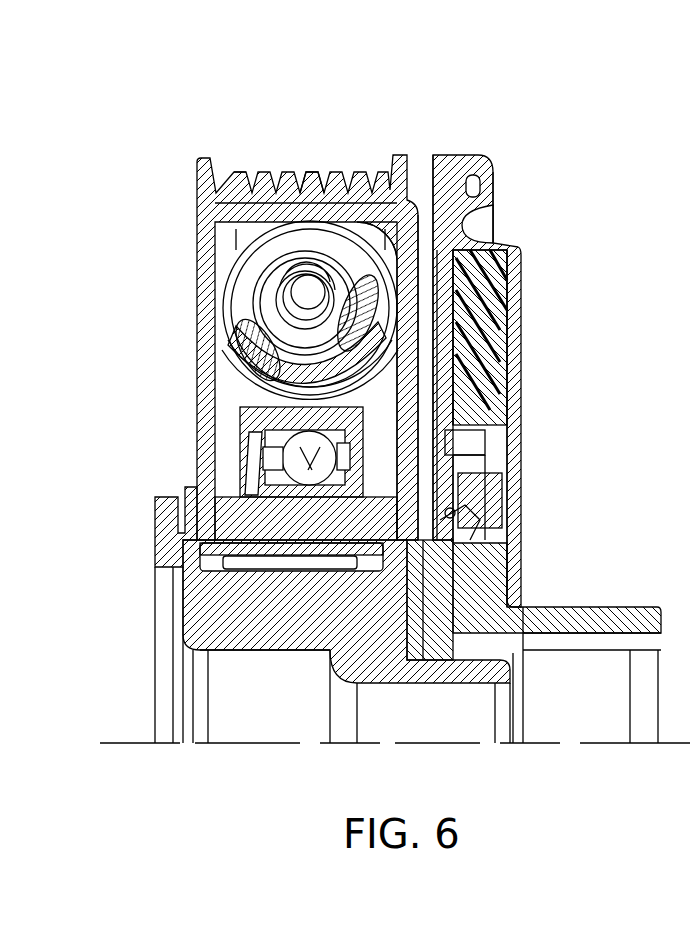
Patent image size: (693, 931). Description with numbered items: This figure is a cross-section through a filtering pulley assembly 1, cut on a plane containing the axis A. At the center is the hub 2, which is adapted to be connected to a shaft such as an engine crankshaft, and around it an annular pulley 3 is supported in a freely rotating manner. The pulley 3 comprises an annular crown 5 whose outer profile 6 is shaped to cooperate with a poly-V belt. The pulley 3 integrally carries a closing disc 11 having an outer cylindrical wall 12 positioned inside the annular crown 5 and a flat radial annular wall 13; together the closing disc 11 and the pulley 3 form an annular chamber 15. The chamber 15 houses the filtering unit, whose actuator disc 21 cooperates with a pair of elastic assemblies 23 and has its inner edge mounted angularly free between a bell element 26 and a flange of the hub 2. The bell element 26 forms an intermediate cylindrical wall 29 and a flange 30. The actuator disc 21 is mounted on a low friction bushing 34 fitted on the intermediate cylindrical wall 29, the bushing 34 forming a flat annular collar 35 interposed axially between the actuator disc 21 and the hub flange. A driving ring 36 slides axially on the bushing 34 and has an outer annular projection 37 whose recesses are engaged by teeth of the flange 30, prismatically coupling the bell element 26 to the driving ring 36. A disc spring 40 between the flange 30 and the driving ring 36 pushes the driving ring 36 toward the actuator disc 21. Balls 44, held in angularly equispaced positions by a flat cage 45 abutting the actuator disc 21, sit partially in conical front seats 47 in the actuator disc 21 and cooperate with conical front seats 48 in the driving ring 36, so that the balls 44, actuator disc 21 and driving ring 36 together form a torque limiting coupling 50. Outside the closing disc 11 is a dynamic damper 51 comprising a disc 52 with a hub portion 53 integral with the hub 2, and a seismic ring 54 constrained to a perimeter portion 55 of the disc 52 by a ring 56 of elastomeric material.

The filtering pulley assembly 1 is at (626, 250).
The hub 2 is at (150, 548).
The annular pulley 3 is at (190, 158).
The annular crown 5 is at (325, 172).
The profile 6 is at (262, 163).
The closing disc 11 is at (414, 214).
The outer cylindrical wall 12 is at (297, 172).
The flat radial annular wall 13 is at (485, 366).
The annular chamber 15 is at (358, 207).
The actuator disc 21 is at (460, 546).
The elastic assemblies 23 is at (236, 259).
The bell element 26 is at (200, 553).
The intermediate cylindrical wall 29 is at (330, 500).
The flange 30 is at (250, 459).
The bushing 34 is at (500, 506).
The flat annular collar 35 is at (503, 479).
The driving ring 36 is at (272, 512).
The outer annular projection 37 is at (255, 413).
The disc spring 40 is at (265, 471).
The balls 44 is at (490, 433).
The cage 45 is at (275, 606).
The front seats 47 is at (500, 468).
The front seats 48 is at (300, 426).
The torque limiting coupling 50 is at (520, 282).
The dynamic damper 51 is at (489, 228).
The disc 52 is at (524, 328).
The hub portion 53 is at (438, 625).
The seismic ring 54 is at (513, 247).
The perimeter portion 55 is at (508, 314).
The ring 56 is at (490, 343).
The axis A is at (135, 745).